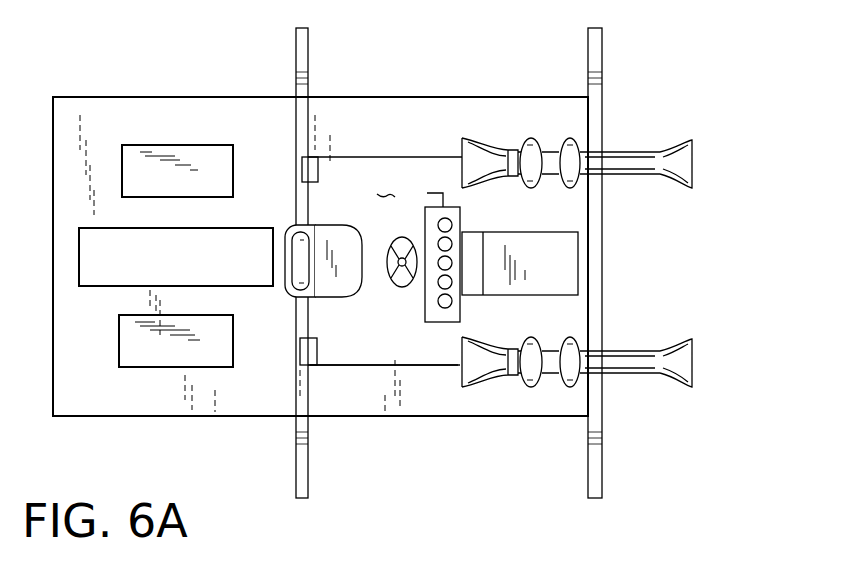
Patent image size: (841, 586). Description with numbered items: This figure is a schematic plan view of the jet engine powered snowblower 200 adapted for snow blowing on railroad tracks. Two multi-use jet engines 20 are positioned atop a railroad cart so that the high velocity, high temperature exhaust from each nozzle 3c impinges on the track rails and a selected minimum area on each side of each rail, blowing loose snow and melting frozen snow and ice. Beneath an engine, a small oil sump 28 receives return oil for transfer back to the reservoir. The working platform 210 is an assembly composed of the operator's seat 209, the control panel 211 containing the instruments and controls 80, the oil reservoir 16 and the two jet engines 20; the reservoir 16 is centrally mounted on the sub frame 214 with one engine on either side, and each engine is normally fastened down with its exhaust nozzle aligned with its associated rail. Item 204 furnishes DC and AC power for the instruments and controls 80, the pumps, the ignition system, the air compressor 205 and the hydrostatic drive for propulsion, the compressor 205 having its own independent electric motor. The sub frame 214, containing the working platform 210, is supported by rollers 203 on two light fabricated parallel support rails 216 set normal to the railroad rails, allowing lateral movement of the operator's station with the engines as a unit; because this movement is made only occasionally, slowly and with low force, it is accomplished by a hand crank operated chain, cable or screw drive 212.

The support rails 216 is at (588, 38).
The air compressor 205 is at (205, 155).
The jet engine powered snowblower 200 is at (197, 268).
The power unit 204 is at (182, 355).
The rollers 203 is at (295, 366).
The operator's seat 209 is at (332, 240).
The working platform 210 is at (388, 188).
The control panel 211 is at (447, 205).
The hand crank operated drive 212 is at (405, 288).
The sub frame 214 is at (441, 367).
The oil reservoir 16 is at (578, 264).
The instruments and controls 80 is at (470, 232).
The exhaust nozzle 3c is at (628, 175).
The multi-use jet engines 20 is at (572, 160).
The small oil sump 28 is at (547, 378).